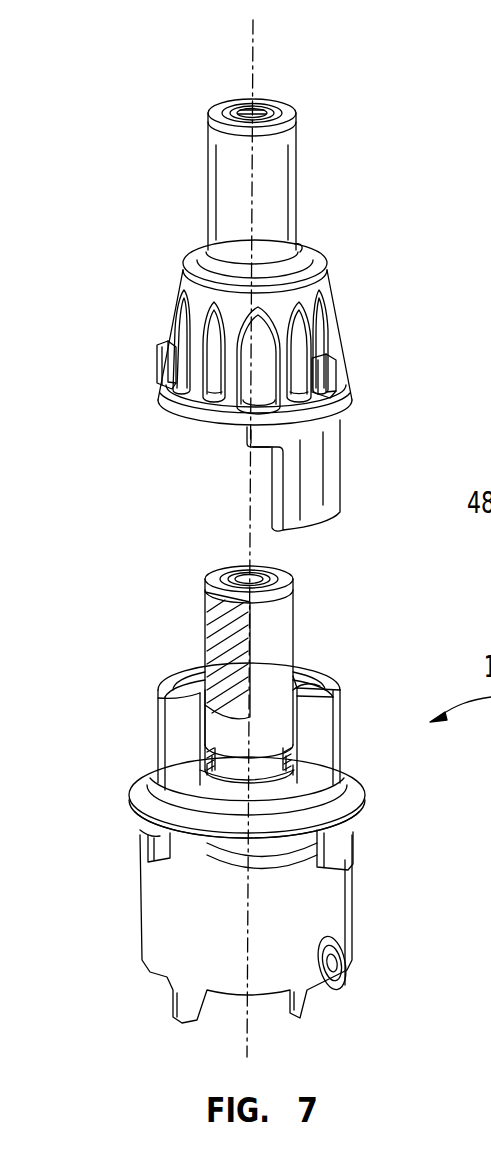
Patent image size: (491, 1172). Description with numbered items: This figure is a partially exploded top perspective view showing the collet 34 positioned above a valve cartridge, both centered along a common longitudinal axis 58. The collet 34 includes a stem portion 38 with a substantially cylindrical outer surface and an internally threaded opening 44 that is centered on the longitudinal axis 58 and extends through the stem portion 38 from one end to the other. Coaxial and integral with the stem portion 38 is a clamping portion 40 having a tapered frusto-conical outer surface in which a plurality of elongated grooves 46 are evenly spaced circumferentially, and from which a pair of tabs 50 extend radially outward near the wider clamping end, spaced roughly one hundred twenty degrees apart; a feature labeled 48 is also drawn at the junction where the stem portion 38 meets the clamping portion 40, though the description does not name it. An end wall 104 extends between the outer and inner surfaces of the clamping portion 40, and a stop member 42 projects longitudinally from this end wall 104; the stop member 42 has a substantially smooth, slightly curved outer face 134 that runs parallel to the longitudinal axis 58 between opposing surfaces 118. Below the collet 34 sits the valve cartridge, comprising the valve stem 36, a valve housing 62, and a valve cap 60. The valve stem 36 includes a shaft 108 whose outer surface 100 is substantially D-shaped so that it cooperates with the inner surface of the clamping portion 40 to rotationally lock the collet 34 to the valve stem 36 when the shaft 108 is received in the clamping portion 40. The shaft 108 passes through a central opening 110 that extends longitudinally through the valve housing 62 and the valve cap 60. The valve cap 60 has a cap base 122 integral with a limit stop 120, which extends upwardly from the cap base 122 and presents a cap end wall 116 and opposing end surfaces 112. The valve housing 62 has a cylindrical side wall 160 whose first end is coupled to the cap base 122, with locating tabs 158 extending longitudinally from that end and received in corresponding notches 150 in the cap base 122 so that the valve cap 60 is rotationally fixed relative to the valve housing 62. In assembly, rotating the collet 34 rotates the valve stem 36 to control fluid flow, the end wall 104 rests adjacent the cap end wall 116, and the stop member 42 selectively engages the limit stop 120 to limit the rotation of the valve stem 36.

The collet 34 is at (170, 165).
The valve stem 36 is at (256, 660).
The stem portion 38 is at (293, 170).
The clamping portion 40 is at (183, 278).
The stop member 42 is at (306, 460).
The threaded opening 44 is at (243, 110).
The grooves 46 is at (297, 328).
The junction ring 48 is at (307, 248).
The tabs 50 is at (168, 363).
The longitudinal axis 58 is at (255, 62).
The valve cap 60 is at (252, 687).
The valve housing 62 is at (337, 922).
The outer surface of shaft 100 is at (210, 640).
The end wall 104 is at (178, 417).
The shaft 108 is at (207, 598).
The central opening 110 is at (301, 792).
The opposing end surfaces 112 is at (182, 730).
The cap end wall 116 is at (327, 682).
The opposing surfaces 118 is at (270, 467).
The limit stop 120 is at (310, 673).
The cap base 122 is at (347, 790).
The outer face 134 is at (333, 473).
The notches 150 is at (168, 850).
The locating tabs 158 is at (192, 845).
The side wall 160 is at (262, 922).